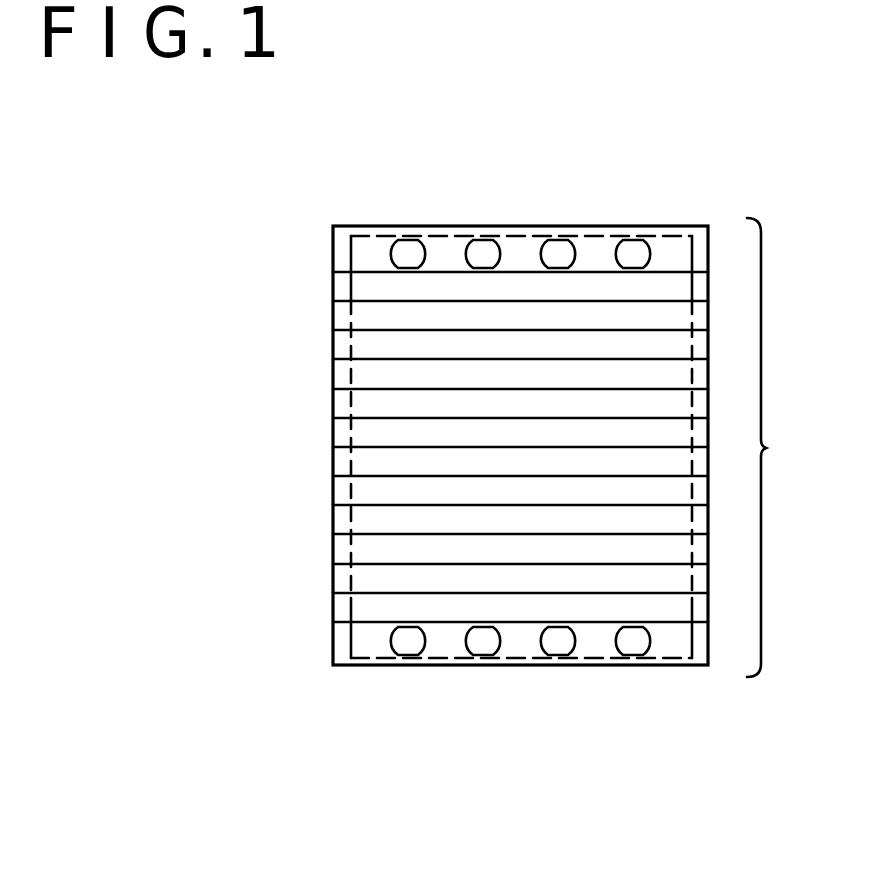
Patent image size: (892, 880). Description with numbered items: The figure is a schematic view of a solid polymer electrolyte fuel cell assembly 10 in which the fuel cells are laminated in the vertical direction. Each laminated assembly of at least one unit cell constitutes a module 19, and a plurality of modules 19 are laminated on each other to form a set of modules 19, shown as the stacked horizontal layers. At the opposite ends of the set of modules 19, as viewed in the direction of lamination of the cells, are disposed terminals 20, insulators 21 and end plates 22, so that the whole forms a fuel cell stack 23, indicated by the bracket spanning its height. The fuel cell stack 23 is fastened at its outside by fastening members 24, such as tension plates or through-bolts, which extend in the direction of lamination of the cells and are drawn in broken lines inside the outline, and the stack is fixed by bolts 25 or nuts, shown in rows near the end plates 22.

The fuel cell assembly 10 is at (698, 229).
The module 19 is at (345, 348).
The terminal 20 is at (345, 318).
The insulator 21 is at (345, 284).
The end plate 22 is at (343, 238).
The fuel cell stack 23 is at (783, 447).
The fastening member 24 is at (350, 626).
The bolt 25 is at (410, 250).